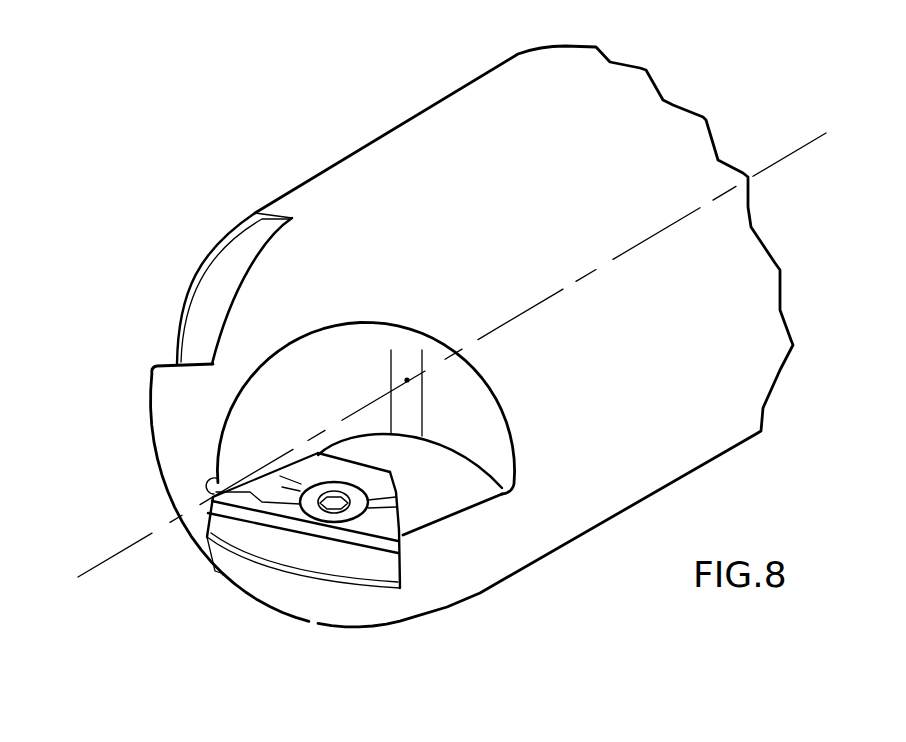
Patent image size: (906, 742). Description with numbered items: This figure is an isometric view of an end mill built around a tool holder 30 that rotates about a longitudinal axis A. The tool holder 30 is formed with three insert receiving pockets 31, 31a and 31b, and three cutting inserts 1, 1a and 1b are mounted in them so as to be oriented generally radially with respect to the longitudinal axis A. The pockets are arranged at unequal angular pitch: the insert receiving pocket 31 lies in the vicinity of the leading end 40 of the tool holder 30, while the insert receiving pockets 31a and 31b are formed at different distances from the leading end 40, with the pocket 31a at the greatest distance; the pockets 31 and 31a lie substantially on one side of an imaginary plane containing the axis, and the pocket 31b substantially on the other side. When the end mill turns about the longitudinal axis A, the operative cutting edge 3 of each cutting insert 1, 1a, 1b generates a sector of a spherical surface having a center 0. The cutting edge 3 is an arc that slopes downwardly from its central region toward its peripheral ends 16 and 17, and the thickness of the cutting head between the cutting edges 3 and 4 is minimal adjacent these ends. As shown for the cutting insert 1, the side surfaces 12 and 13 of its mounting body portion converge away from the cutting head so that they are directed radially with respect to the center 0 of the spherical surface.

The tool holder 30 is at (451, 143).
The insert receiving pocket 31 is at (473, 419).
The insert receiving pocket 31a is at (286, 208).
The insert receiving pocket 31b is at (306, 623).
The cutting insert 1 is at (335, 562).
The cutting insert 1a is at (212, 283).
The cutting insert 1b is at (213, 573).
The cutting edge 3 is at (405, 531).
The cutting edge 4 is at (370, 592).
The side surface 12 is at (403, 490).
The side surface 13 is at (267, 466).
The peripheral end 16 is at (400, 540).
The peripheral end 17 is at (208, 494).
The center 0 is at (407, 380).
The leading end 40 is at (143, 517).
The longitudinal axis A is at (793, 148).